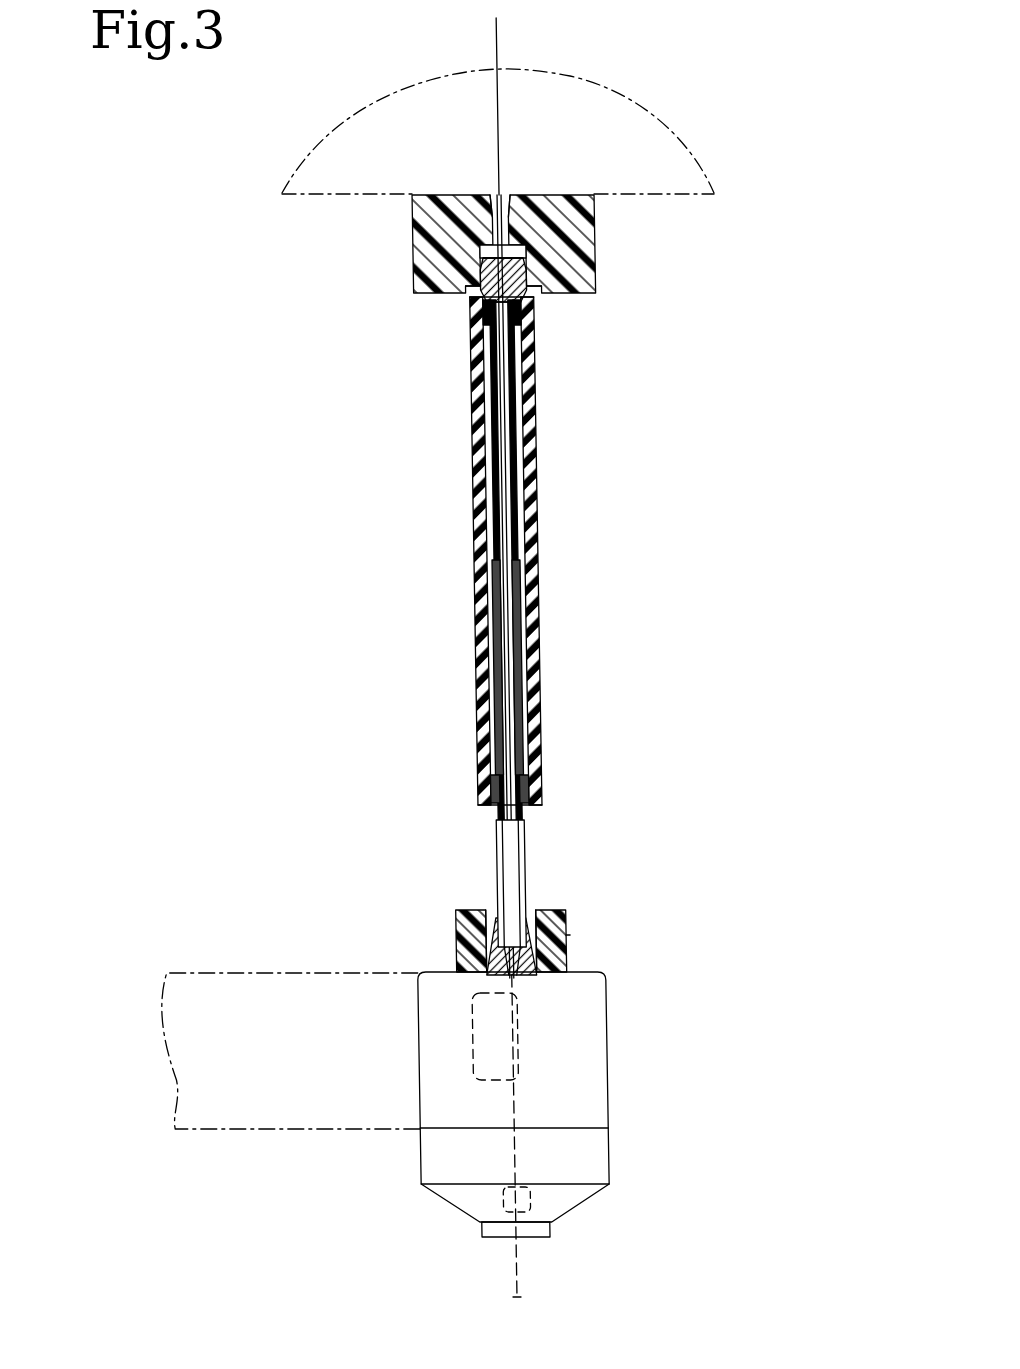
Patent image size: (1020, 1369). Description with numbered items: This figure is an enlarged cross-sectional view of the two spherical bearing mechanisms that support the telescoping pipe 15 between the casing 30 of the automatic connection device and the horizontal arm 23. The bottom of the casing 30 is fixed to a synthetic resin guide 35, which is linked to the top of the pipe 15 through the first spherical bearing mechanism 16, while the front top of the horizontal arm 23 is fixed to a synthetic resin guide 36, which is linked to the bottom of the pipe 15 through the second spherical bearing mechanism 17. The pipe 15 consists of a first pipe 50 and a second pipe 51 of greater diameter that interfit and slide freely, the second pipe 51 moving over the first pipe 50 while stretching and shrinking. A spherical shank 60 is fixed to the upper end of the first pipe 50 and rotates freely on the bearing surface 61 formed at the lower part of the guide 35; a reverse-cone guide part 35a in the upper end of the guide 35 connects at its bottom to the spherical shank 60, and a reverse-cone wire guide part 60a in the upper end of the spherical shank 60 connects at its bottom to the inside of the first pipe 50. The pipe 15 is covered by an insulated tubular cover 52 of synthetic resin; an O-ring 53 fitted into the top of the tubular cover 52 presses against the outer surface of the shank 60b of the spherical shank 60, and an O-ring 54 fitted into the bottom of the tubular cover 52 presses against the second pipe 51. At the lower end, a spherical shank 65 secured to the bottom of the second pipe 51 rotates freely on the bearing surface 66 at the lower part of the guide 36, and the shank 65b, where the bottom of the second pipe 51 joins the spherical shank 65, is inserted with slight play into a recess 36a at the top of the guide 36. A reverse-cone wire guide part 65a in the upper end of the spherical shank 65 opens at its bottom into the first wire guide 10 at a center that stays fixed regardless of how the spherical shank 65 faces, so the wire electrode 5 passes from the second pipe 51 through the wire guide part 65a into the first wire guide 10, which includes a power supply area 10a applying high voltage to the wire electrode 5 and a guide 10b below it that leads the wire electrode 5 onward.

The casing 30 is at (655, 133).
The synthetic resin guide 35 is at (410, 232).
The guide part 35a is at (505, 207).
The spherical shank 60 is at (523, 262).
The wire guide part 60a is at (485, 245).
The shank 60b is at (470, 355).
The bearing surface 61 is at (458, 288).
The first spherical bearing mechanism 16 is at (450, 312).
The tubular cover 52 is at (475, 495).
The O-ring 53 is at (530, 308).
The second pipe 51 is at (528, 633).
The first pipe 50 is at (512, 503).
The pipe 15 is at (633, 492).
The O-ring 54 is at (538, 768).
The second spherical bearing mechanism 17 is at (460, 900).
The synthetic resin guide 36 is at (455, 915).
The recess 36a is at (560, 912).
The bearing surface 66 is at (455, 960).
The spherical shank 65 is at (568, 963).
The wire guide part 65a is at (523, 975).
The shank 65b is at (568, 935).
The horizontal arm 23 is at (197, 968).
The first wire guide 10 is at (608, 1080).
The power supply area 10a is at (473, 1042).
The guide 10b is at (510, 1205).
The wire electrode 5 is at (517, 1273).